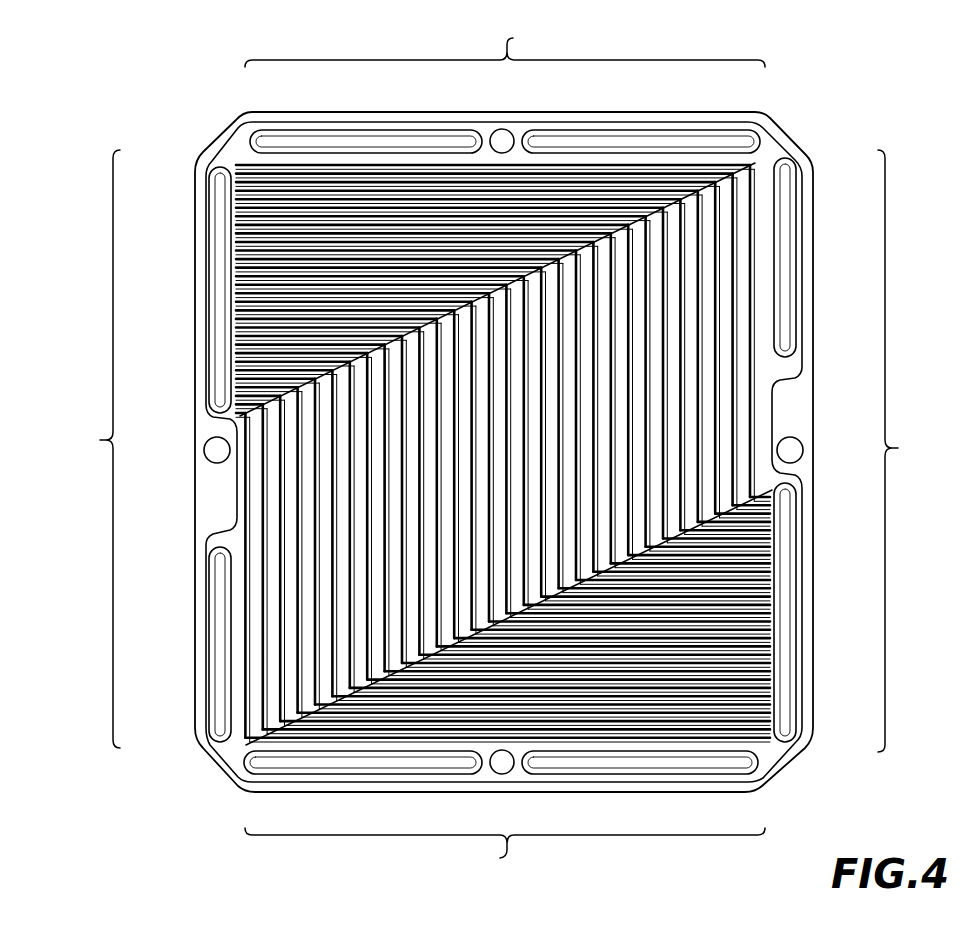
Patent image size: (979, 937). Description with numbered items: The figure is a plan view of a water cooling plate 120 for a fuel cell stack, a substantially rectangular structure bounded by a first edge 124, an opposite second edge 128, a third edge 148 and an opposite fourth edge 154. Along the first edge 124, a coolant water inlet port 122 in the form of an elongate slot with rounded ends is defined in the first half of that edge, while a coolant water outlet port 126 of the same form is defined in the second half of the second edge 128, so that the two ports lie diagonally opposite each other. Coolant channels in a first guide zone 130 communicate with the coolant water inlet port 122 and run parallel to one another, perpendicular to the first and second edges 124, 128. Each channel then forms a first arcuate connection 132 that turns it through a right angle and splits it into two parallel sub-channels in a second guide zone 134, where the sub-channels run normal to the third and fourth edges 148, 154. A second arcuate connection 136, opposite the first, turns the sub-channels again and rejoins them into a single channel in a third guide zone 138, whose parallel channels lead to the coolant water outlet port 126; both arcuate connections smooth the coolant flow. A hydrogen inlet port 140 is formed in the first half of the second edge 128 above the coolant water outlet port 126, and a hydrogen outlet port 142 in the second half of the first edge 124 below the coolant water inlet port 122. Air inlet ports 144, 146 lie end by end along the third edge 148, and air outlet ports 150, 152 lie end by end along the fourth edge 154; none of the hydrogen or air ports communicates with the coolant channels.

The water cooling plate 120 is at (78, 835).
The coolant water inlet port 122 is at (215, 263).
The first edge 124 is at (100, 440).
The coolant water outlet port 126 is at (782, 607).
The second edge 128 is at (898, 448).
The first guide zone 130 is at (262, 228).
The first arcuate connection 132 is at (483, 278).
The second guide zone 134 is at (720, 306).
The second arcuate connection 136 is at (563, 593).
The third guide zone 138 is at (745, 693).
The hydrogen inlet port 140 is at (795, 247).
The hydrogen outlet port 142 is at (215, 638).
The air inlet port 144 is at (262, 141).
The air inlet port 146 is at (745, 137).
The third edge 148 is at (513, 38).
The air outlet port 150 is at (255, 768).
The air outlet port 152 is at (745, 762).
The fourth edge 154 is at (500, 858).